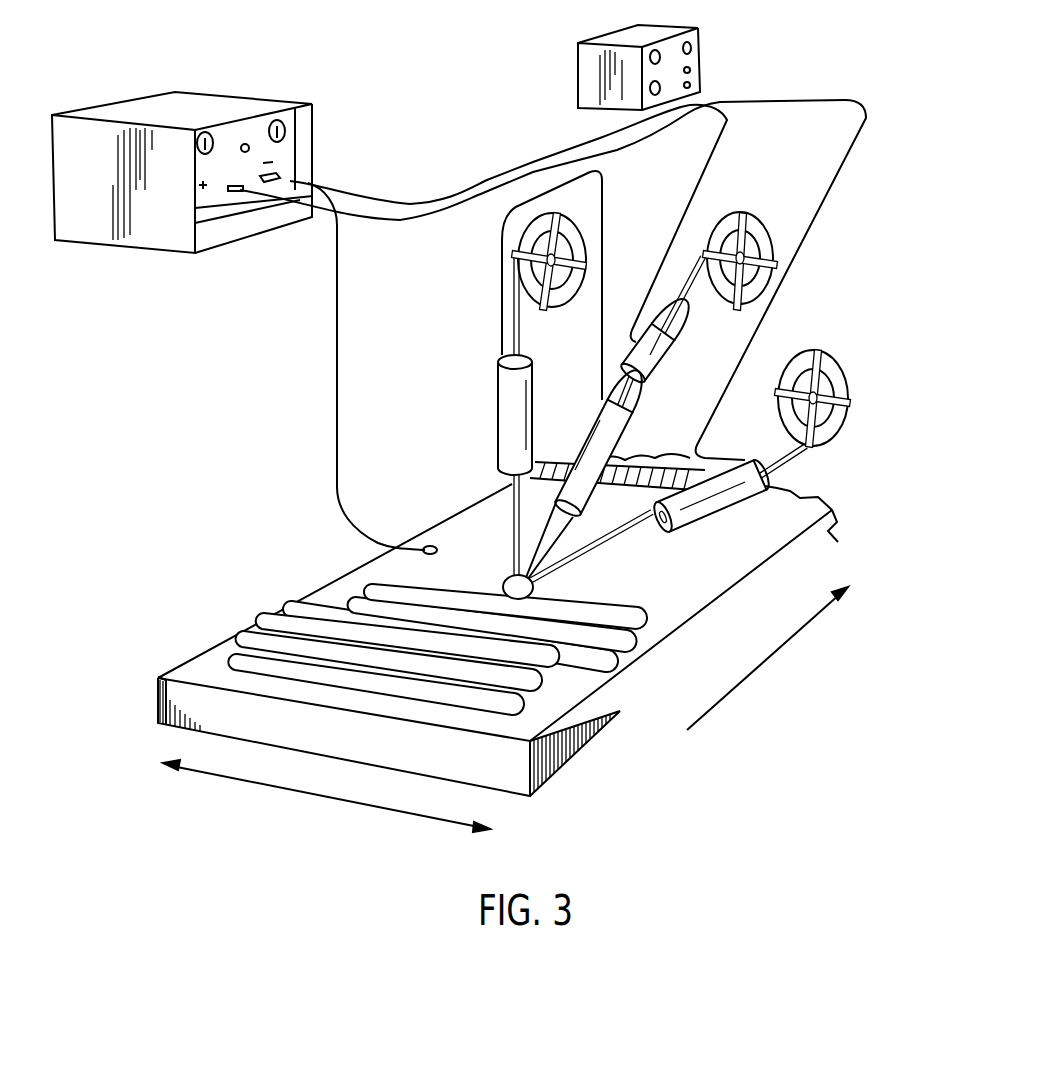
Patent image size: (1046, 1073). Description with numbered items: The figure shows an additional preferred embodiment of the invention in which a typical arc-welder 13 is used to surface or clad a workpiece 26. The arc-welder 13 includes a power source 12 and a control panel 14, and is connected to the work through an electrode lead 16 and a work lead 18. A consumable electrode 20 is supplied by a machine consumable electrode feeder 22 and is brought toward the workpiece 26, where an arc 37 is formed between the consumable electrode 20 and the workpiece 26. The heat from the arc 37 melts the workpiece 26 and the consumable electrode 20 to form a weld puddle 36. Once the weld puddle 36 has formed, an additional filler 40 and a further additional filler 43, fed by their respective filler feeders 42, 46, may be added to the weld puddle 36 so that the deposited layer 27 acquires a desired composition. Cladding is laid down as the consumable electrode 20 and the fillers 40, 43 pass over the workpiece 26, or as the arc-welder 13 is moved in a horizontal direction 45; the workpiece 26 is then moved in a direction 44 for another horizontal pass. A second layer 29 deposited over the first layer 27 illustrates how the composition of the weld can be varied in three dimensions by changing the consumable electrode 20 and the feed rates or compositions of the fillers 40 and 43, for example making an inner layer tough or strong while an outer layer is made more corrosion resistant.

The power source 12 is at (160, 90).
The arc-welder 13 is at (487, 180).
The control panel 14 is at (700, 58).
The electrode lead 16 is at (517, 181).
The work lead 18 is at (345, 465).
The consumable electrode 20 is at (577, 525).
The machine consumable electrode feeder 22 is at (665, 348).
The workpiece 26 is at (676, 619).
The layer 27 is at (480, 707).
The second layer 29 is at (383, 668).
The weld puddle 36 is at (505, 588).
The arc 37 is at (543, 566).
The additional filler 40 is at (512, 520).
The filler feeder 42 is at (498, 395).
The additional filler 43 is at (620, 548).
The direction 44 is at (773, 650).
The horizontal direction 45 is at (330, 798).
The filler feeder 46 is at (720, 502).